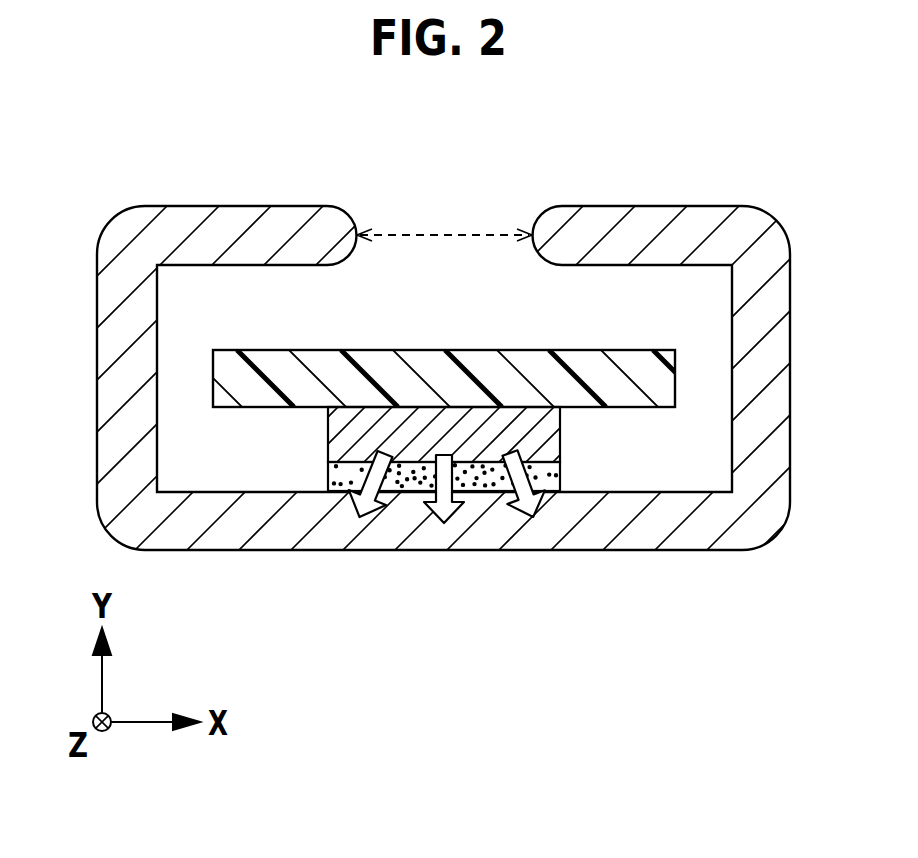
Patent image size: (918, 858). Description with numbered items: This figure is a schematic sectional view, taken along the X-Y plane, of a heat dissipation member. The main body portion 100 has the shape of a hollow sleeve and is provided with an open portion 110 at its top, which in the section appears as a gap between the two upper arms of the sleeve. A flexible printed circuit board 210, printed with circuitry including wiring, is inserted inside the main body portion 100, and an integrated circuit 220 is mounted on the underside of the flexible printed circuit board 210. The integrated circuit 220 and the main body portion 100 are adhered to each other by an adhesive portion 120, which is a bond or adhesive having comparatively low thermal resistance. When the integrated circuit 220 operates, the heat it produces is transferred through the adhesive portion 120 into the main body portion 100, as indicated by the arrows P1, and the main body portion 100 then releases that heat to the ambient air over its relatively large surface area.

The main body portion 100 is at (643, 222).
The open portion 110 is at (446, 230).
The flexible printed circuit board 210 is at (384, 352).
The integrated circuit 220 is at (328, 442).
The adhesive portion 120 is at (560, 478).
The arrow indicating heat transfer P1 is at (508, 506).